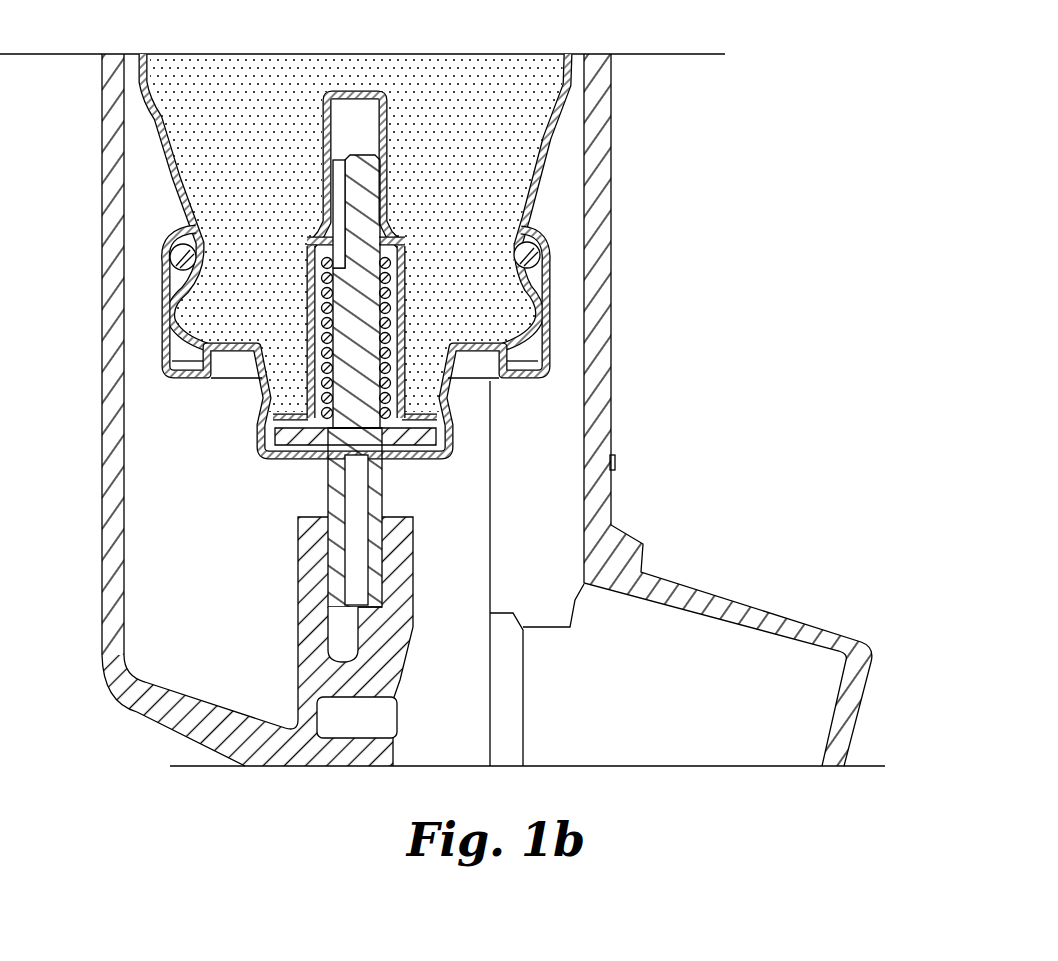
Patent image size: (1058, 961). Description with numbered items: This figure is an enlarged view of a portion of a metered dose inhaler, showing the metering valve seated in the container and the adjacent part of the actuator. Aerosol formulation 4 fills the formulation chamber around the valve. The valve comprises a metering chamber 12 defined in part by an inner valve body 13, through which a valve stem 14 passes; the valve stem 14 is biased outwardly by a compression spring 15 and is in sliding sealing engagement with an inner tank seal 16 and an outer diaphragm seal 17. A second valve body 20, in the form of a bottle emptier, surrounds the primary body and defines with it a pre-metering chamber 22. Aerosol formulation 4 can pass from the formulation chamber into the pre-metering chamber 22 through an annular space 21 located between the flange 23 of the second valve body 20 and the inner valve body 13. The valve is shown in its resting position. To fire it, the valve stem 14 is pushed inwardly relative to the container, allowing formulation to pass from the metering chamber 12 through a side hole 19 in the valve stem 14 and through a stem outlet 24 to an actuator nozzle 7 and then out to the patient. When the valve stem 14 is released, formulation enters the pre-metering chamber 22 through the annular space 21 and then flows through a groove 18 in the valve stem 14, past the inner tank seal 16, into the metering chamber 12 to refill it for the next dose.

The aerosol formulation 4 is at (197, 122).
The actuator nozzle 7 is at (357, 652).
The metering chamber 12 is at (398, 310).
The inner valve body 13 is at (398, 384).
The valve stem 14 is at (373, 482).
The compression spring 15 is at (388, 272).
The inner tank seal 16 is at (328, 251).
The outer diaphragm seal 17 is at (290, 433).
The groove 18 is at (345, 186).
The side hole 19 is at (337, 466).
The second valve body 20 is at (385, 165).
The annular space 21 is at (268, 418).
The pre-metering chamber 22 is at (353, 118).
The flange 23 is at (447, 415).
The stem outlet 24 is at (347, 607).